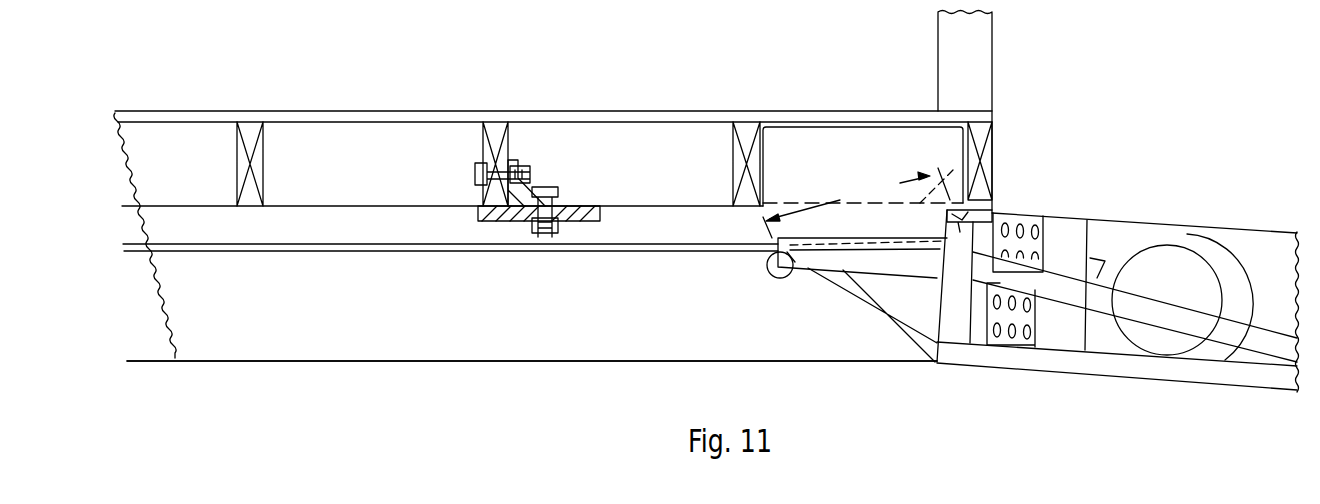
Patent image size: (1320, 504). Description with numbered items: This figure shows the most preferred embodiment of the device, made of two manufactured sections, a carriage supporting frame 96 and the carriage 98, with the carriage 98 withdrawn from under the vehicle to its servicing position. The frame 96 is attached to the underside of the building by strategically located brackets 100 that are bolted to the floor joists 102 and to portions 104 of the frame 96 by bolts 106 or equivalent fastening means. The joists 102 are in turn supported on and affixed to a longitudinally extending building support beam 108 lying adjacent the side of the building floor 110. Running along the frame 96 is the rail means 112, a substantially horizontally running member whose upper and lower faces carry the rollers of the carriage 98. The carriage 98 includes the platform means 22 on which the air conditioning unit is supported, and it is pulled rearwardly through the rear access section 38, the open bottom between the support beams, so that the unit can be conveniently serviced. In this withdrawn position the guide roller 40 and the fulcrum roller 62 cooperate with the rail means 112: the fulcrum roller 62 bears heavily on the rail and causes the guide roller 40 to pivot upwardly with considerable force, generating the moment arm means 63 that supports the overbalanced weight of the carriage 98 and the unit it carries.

The platform means 22 is at (1233, 363).
The rear access section 38 is at (918, 306).
The guide roller 40 is at (773, 273).
The fulcrum roller 62 is at (997, 210).
The moment arm means 63 is at (858, 203).
The carriage supporting frame 96 is at (870, 123).
The carriage 98 is at (1100, 393).
The brackets 100 is at (512, 168).
The floor joists 102 is at (245, 125).
The portions of the frame 104 is at (583, 206).
The bolts 106 is at (481, 160).
The building support beams 108 is at (987, 148).
The building floor 110 is at (805, 109).
The rail means 112 is at (642, 252).